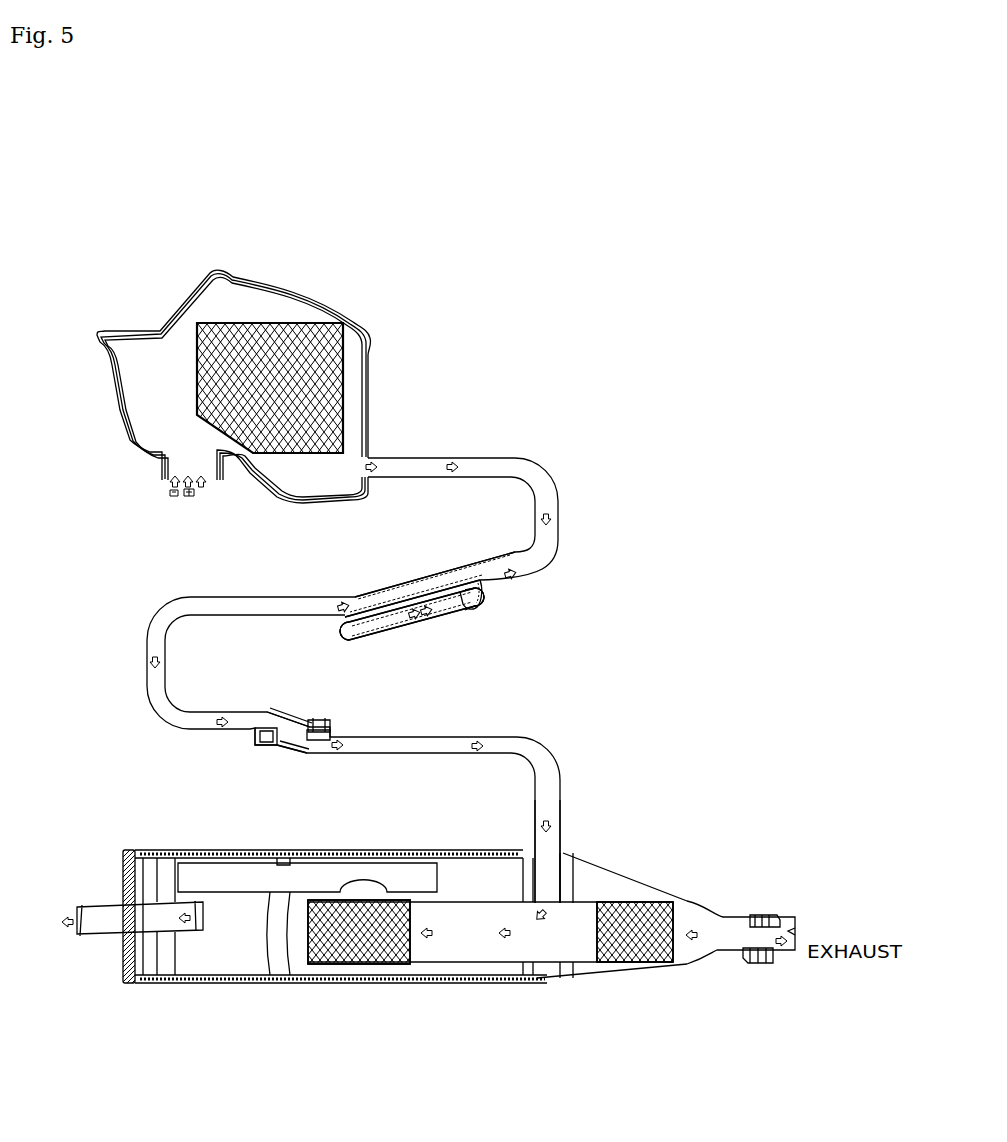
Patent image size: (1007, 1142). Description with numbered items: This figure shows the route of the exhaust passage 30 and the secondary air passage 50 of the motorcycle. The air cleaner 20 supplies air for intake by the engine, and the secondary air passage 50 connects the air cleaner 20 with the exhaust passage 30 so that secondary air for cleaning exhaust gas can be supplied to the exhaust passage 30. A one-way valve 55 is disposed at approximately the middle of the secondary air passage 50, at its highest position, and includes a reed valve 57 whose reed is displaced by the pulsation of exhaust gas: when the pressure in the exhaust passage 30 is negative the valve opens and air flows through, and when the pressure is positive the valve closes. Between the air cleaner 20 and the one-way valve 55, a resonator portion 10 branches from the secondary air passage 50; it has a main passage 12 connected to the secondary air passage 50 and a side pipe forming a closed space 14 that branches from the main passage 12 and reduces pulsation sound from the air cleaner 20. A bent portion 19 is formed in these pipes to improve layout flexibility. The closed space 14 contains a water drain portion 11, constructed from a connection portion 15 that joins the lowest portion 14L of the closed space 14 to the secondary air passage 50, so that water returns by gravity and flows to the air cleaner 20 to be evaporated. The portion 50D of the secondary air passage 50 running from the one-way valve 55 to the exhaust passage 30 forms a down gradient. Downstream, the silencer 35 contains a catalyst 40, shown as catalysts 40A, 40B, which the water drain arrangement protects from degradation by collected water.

The resonator portion 10 is at (452, 627).
The water drain portion 11 is at (419, 581).
The main passage 12 is at (393, 592).
The closed space 14 is at (390, 632).
The lowest portion 14L is at (481, 600).
The connection portion 15 is at (471, 582).
The bent portion 19 is at (358, 651).
The air cleaner 20 is at (297, 478).
The exhaust passage 30 is at (732, 915).
The silencer 35 is at (455, 983).
The catalyst 40 is at (489, 962).
The catalyst 40A is at (638, 965).
The catalyst 40B is at (352, 965).
The secondary air passage 50 is at (493, 458).
The portion of the secondary air passage 50D is at (560, 790).
The one-way valve 55 is at (300, 705).
The reed valve 57 is at (292, 743).